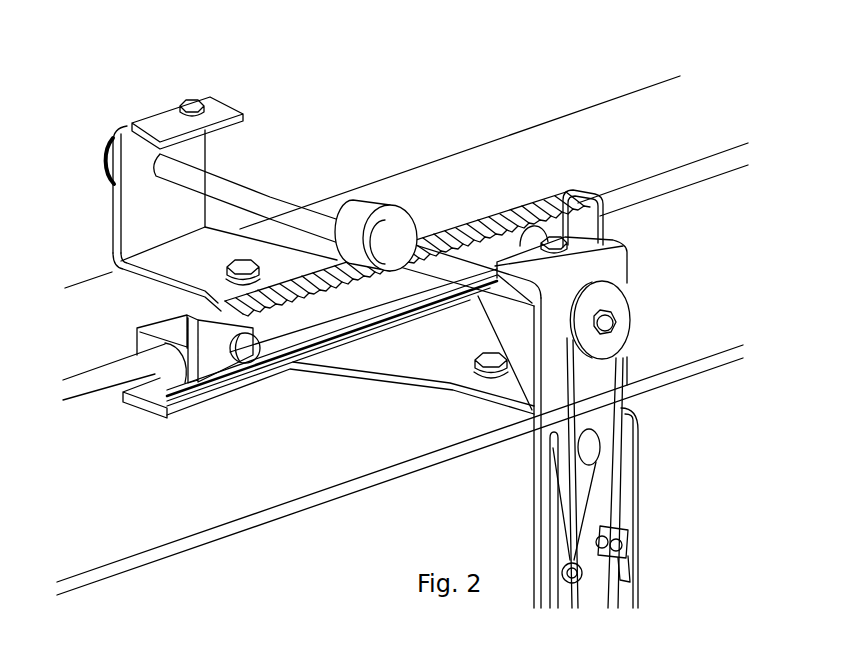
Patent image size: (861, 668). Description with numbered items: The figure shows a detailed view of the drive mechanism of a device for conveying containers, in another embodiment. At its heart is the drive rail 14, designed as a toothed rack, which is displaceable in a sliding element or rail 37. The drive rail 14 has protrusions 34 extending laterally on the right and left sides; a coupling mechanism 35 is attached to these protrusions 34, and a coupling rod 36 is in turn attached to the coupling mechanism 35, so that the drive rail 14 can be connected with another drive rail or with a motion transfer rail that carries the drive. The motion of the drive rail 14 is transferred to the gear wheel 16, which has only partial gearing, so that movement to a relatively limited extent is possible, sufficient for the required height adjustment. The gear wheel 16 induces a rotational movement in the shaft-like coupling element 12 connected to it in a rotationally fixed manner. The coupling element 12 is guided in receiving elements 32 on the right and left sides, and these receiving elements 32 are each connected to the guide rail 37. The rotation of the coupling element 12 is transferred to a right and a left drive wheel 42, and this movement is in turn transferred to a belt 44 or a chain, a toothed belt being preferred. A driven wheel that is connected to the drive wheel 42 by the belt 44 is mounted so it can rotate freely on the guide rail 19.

The coupling element 12 is at (270, 200).
The drive rail 14 is at (477, 215).
The gear wheel 16 is at (360, 220).
The guide rail 19 is at (627, 497).
The receiving elements 32 is at (140, 187).
The protrusions 34 is at (243, 352).
The coupling mechanism 35 is at (166, 417).
The coupling rod 36 is at (84, 379).
The rail 37 is at (155, 362).
The drive wheel 42 is at (143, 112).
The belt 44 is at (620, 380).